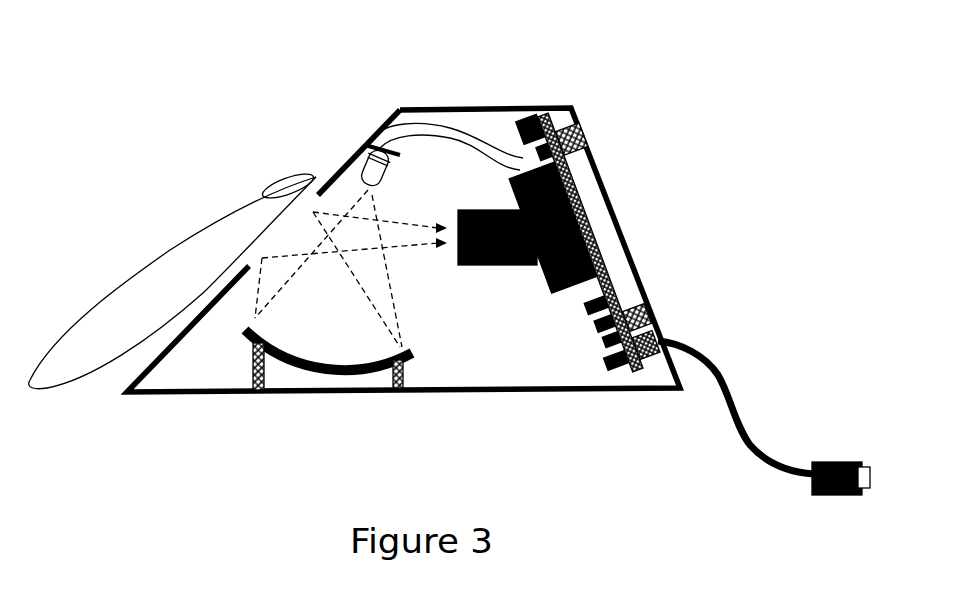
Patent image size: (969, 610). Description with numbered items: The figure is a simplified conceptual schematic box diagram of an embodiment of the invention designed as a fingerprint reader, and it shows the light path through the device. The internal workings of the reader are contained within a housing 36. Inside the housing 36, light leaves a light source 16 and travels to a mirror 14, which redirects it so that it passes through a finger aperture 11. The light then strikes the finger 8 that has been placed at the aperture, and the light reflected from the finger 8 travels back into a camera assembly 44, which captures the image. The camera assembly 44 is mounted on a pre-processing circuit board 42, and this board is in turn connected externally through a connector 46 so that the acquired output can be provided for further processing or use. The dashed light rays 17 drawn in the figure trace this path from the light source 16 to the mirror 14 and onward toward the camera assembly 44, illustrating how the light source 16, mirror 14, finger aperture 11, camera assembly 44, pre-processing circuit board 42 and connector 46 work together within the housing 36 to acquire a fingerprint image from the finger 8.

The finger 8 is at (213, 220).
The finger aperture 11 is at (283, 240).
The mirror 14 is at (281, 357).
The light source 16 is at (366, 142).
The light rays 17 is at (372, 202).
The housing 36 is at (508, 108).
The pre-processing circuit board 42 is at (583, 208).
The camera assembly 44 is at (527, 272).
The connector 46 is at (840, 463).